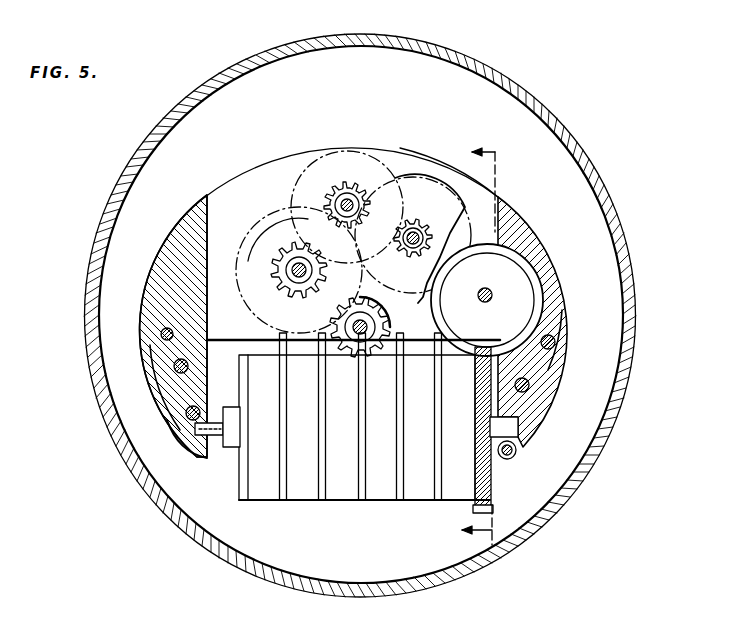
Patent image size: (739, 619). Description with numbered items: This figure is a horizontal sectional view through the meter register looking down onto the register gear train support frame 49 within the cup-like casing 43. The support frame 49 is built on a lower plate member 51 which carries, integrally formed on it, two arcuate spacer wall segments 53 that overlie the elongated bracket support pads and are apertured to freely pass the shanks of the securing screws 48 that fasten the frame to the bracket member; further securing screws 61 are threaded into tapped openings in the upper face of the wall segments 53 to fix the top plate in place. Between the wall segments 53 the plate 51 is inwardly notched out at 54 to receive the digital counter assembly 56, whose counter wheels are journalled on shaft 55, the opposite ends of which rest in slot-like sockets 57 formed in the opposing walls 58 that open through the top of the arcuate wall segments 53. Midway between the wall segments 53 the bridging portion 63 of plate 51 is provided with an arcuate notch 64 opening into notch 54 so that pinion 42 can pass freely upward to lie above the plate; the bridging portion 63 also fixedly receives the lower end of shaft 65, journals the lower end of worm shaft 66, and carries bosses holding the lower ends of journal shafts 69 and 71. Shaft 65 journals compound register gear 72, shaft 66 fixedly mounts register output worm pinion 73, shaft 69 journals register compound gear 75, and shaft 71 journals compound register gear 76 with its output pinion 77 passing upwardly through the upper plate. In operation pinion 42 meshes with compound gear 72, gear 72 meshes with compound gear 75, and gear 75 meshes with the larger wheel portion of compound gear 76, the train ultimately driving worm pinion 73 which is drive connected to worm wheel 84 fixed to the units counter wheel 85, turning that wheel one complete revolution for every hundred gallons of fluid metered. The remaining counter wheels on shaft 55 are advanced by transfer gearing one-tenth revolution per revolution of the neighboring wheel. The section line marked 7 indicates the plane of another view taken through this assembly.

The cup-like casing 43 is at (127, 192).
The register gear train support frame 49 is at (166, 250).
The opposing walls 58 is at (213, 203).
The arcuate spacer wall segments 53 is at (166, 399).
The securing screws 48 is at (158, 333).
The securing screws 61 is at (172, 366).
The lower plate member 51 is at (258, 168).
The bridging portion 63 is at (452, 174).
The register compound gear 75 is at (306, 160).
The compound register gear 72 is at (237, 258).
The compound register gear 76 is at (400, 178).
The output pinion 77 is at (428, 250).
The journal shaft 69 is at (345, 203).
The shaft 65 is at (290, 272).
The journal shaft 71 is at (415, 234).
The arcuate notch 64 is at (392, 318).
The register output worm pinion 73 is at (487, 300).
The worm shaft 66 is at (484, 289).
The pinion 42 is at (360, 352).
The digital counter assembly 56 is at (383, 503).
The units counter wheel 85 is at (448, 494).
The worm wheel 84 is at (489, 478).
The slot-like sockets 57 is at (192, 431).
The shaft 55 is at (218, 421).
The notch 54 is at (210, 449).
The section line 7 is at (485, 345).